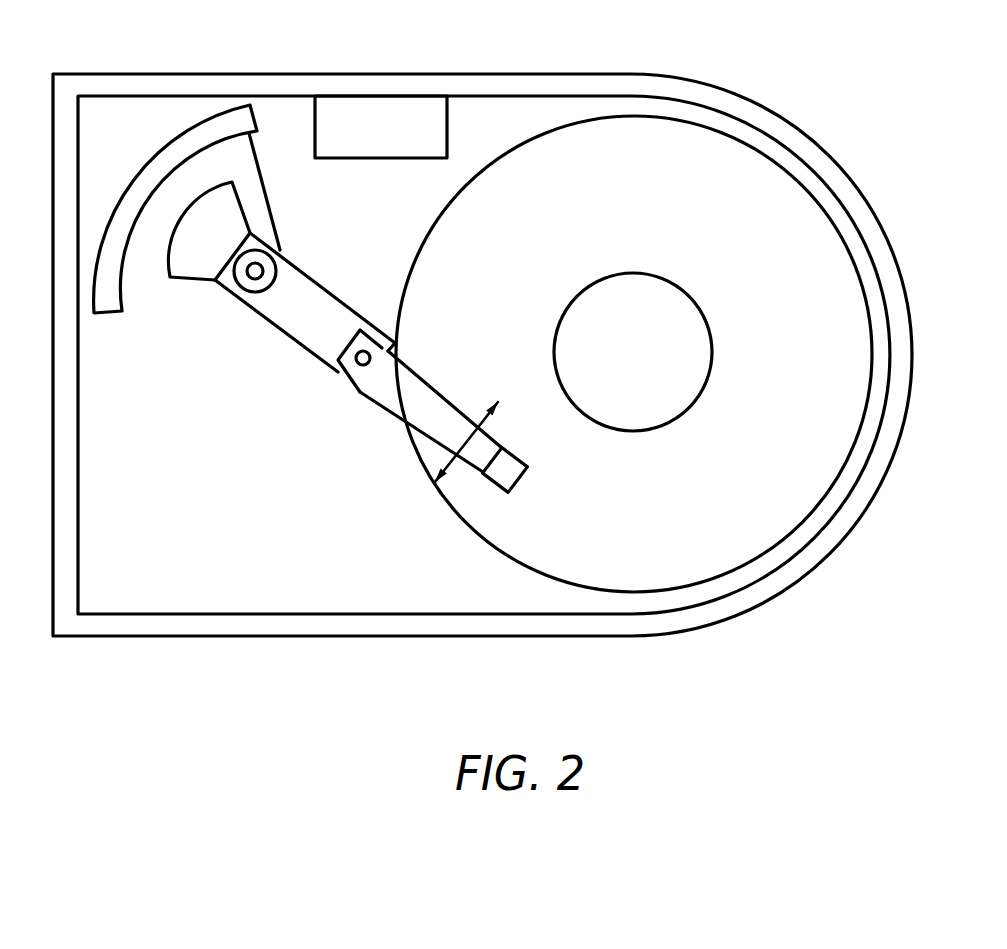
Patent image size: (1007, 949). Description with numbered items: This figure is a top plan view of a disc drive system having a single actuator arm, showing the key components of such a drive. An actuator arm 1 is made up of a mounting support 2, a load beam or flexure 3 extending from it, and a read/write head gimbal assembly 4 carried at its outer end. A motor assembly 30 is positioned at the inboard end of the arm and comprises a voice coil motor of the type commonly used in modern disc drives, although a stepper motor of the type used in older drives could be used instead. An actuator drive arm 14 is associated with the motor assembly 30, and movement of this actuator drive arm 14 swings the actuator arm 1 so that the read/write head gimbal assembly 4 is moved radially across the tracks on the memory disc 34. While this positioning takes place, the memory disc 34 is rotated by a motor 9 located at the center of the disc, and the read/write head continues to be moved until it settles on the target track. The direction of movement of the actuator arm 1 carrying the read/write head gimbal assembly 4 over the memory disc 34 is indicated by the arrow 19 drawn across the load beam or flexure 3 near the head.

The actuator arm 1 is at (315, 450).
The mounting support 2 is at (311, 276).
The load beam or flexure 3 is at (432, 388).
The read/write head gimbal assembly 4 is at (528, 470).
The motor 9 is at (640, 377).
The actuator drive arm 14 is at (203, 302).
The arrow 19 is at (492, 415).
The motor assembly 30 is at (200, 120).
The memory disc 34 is at (817, 383).